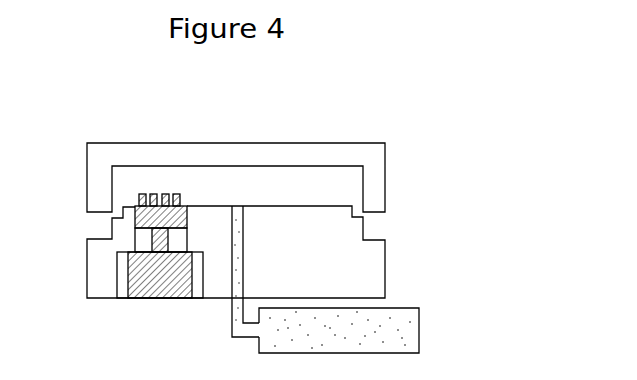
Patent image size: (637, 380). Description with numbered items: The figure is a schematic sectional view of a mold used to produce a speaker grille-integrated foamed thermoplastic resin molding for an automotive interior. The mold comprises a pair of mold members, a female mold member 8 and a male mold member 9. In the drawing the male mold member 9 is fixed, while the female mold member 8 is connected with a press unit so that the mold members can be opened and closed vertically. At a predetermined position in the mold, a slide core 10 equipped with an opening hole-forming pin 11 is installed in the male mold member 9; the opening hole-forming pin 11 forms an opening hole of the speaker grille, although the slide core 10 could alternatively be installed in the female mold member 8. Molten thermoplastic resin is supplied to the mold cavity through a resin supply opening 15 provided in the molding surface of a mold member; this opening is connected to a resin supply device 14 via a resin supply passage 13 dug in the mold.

The female mold member 8 is at (379, 182).
The male mold member 9 is at (373, 280).
The slide core 10 is at (192, 207).
The opening hole-forming pin 11 is at (180, 195).
The resin supply passage 13 is at (245, 273).
The resin supply device 14 is at (388, 325).
The resin supply opening 15 is at (240, 206).